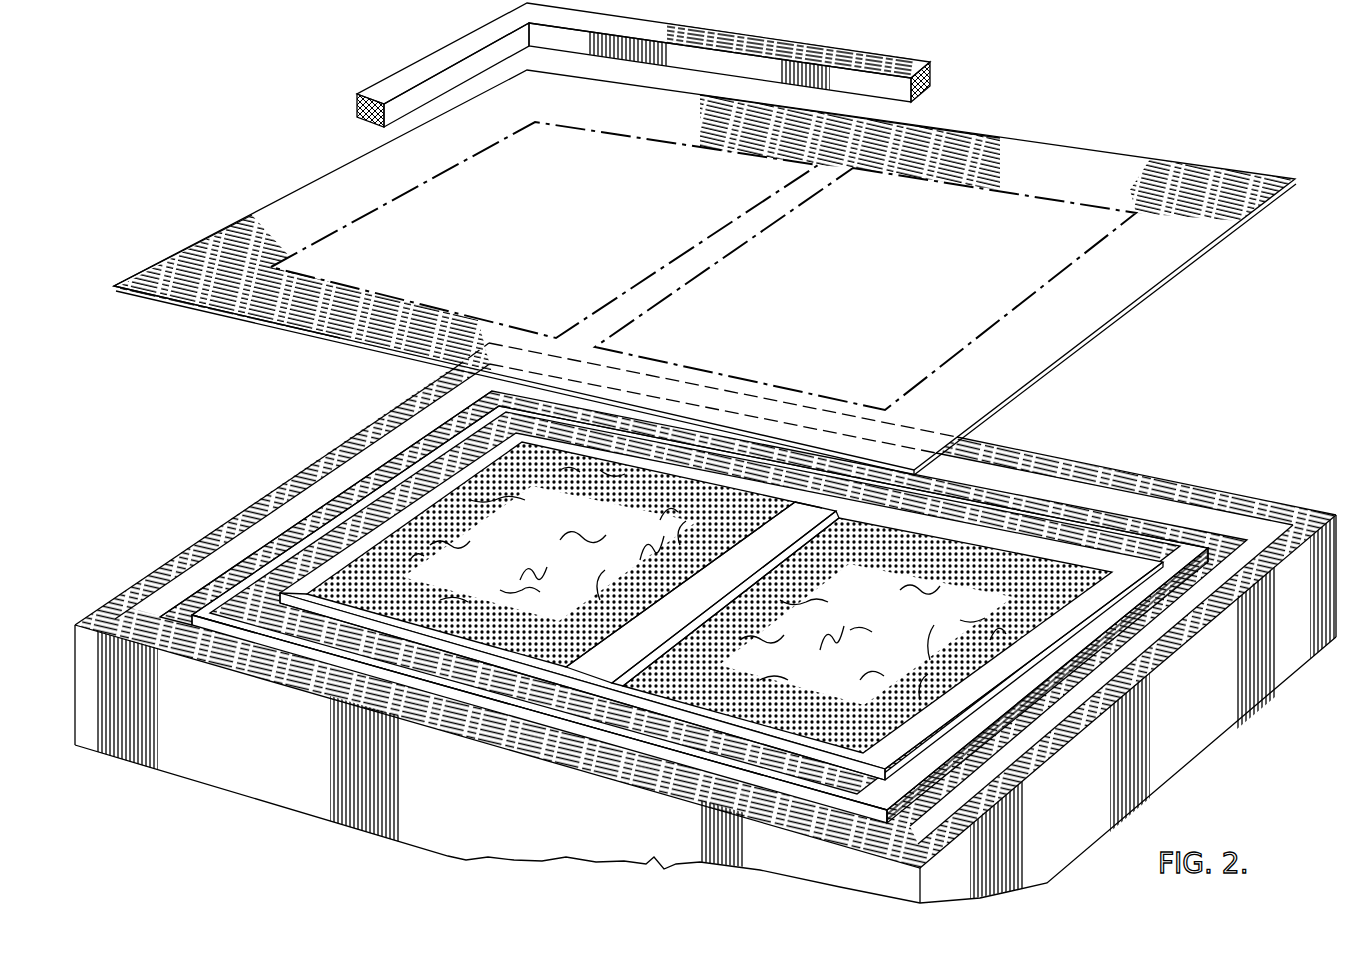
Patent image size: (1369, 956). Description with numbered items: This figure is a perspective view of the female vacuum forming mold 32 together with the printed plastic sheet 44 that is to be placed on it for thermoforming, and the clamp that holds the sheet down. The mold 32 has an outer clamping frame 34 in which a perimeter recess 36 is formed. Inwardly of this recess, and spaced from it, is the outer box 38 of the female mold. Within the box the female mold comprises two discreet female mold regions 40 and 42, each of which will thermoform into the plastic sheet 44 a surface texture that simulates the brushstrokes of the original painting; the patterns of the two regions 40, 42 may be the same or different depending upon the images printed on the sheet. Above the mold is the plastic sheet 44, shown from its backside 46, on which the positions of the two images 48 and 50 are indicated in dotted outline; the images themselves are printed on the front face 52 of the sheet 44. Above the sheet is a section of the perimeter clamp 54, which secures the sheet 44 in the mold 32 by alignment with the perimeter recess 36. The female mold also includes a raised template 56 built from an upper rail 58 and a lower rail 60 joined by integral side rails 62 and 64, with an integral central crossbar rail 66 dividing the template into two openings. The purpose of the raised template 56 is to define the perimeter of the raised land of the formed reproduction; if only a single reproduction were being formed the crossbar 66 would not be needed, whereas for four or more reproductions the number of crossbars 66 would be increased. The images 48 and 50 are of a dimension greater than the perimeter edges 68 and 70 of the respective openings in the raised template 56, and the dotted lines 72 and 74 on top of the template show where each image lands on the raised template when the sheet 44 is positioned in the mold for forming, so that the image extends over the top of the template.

The female vacuum forming mold 32 is at (1180, 448).
The outer clamping frame 34 is at (1250, 505).
The perimeter recess 36 is at (1255, 529).
The outer box 38 is at (993, 512).
The female mold region 40 is at (353, 552).
The female mold region 42 is at (918, 620).
The plastic sheet 44 is at (1180, 183).
The backside of the sheet 46 is at (1019, 150).
The image 48 is at (334, 256).
The image 50 is at (1085, 235).
The front face of the sheet 52 is at (176, 311).
The perimeter clamp 54 is at (798, 53).
The raised template 56 is at (588, 668).
The upper rail 58 is at (1044, 543).
The lower rail 60 is at (347, 622).
The side rail 62 is at (308, 553).
The side rail 64 is at (985, 694).
The crossbar rail 66 is at (748, 569).
The perimeter edge of opening 68 is at (698, 702).
The perimeter edge of opening 70 is at (447, 532).
The dotted line 72 is at (610, 672).
The dotted line 74 is at (822, 502).